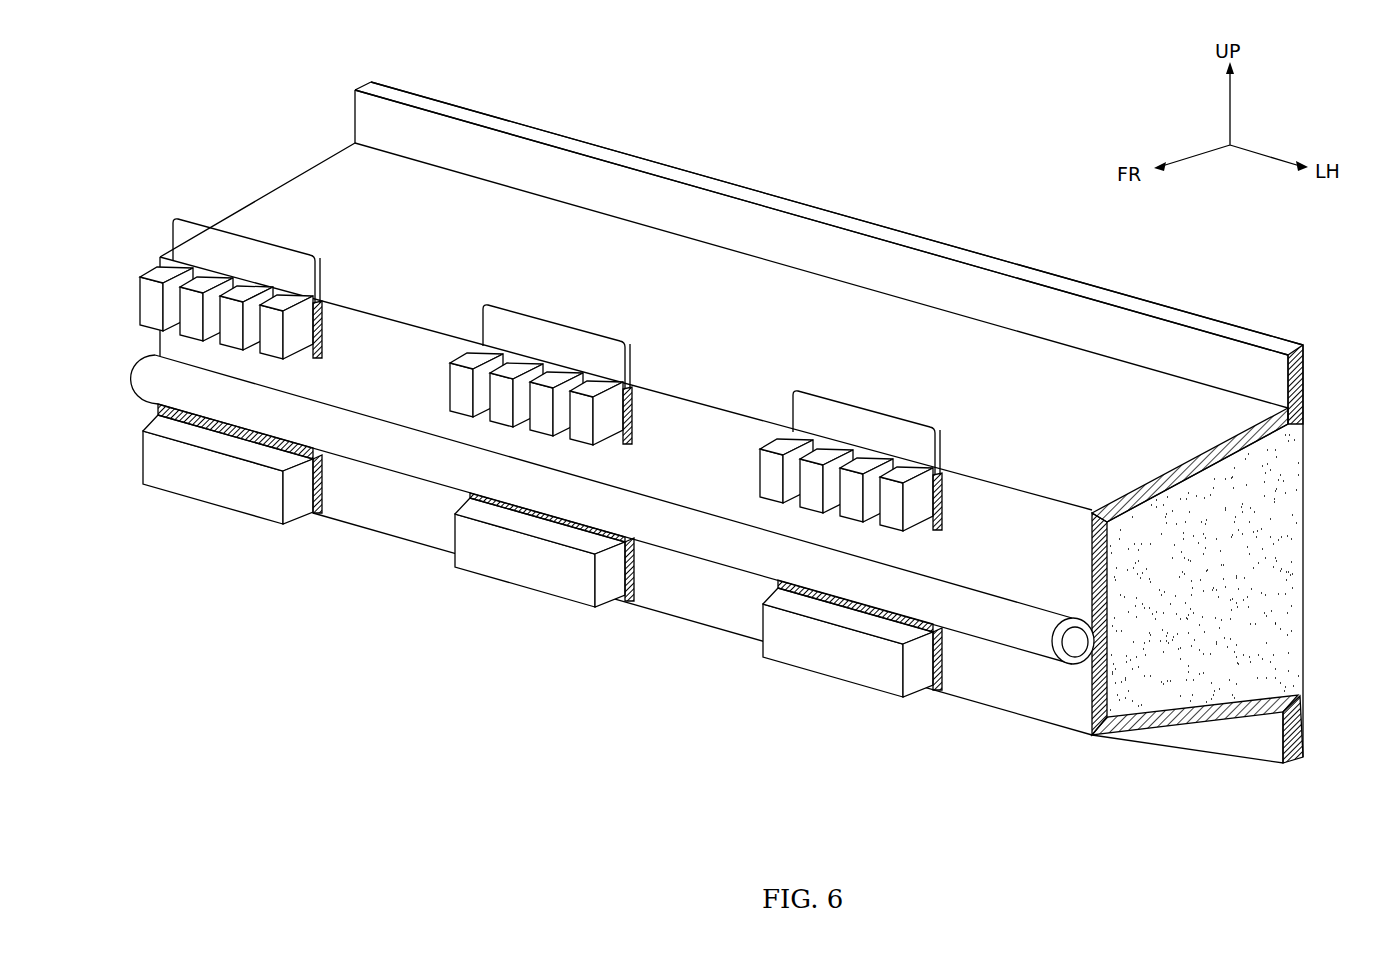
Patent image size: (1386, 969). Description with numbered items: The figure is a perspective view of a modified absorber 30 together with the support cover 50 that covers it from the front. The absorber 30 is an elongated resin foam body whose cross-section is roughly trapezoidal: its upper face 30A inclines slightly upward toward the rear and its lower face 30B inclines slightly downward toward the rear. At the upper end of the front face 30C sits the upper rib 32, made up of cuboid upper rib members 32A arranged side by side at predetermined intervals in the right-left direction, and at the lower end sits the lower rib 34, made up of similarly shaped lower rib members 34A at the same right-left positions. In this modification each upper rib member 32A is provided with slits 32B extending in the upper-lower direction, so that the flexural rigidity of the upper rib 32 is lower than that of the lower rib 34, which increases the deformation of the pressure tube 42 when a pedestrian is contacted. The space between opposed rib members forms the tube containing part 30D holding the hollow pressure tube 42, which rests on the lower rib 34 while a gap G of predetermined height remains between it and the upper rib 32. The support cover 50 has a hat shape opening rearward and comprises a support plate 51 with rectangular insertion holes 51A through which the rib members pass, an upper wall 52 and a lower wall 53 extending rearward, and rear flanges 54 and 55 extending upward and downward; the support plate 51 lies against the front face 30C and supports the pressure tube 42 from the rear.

The absorber 30 is at (1268, 547).
The upper face 30A is at (1152, 480).
The lower face 30B is at (1197, 726).
The front face 30C is at (1100, 738).
The tube containing part 30D is at (902, 548).
The upper rib 32 is at (520, 336).
The upper rib members 32A is at (870, 405).
The slits 32B is at (264, 310).
The lower rib 34 is at (538, 586).
The lower rib members 34A is at (819, 678).
The pressure tube 42 is at (409, 428).
The support cover 50 is at (773, 194).
The support plate 51 is at (397, 518).
The insertion holes 51A is at (938, 692).
The upper wall 52 is at (634, 252).
The lower wall 53 is at (1138, 737).
The rear flange 54 is at (856, 221).
The rear flange 55 is at (1288, 766).
The gap G is at (787, 527).